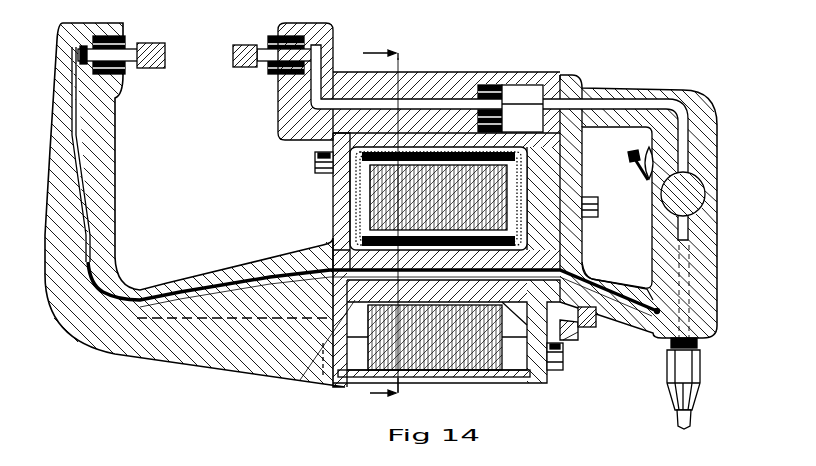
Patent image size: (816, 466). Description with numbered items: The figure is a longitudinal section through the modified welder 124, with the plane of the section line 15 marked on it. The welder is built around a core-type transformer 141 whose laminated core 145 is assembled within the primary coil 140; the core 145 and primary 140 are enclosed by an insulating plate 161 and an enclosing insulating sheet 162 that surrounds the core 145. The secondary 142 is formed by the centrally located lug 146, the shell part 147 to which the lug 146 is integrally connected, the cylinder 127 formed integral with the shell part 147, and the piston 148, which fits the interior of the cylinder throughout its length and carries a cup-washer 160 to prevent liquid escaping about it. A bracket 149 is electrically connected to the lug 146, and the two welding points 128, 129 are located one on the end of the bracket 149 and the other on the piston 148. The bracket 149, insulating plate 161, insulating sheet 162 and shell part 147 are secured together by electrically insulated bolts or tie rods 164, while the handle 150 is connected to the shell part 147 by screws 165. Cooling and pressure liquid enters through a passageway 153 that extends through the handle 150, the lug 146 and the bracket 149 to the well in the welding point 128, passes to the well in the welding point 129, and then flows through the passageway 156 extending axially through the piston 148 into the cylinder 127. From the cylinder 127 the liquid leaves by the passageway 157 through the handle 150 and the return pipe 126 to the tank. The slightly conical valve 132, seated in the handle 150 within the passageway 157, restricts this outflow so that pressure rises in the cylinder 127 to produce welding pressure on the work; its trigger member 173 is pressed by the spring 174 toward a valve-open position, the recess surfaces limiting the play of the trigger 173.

The section line 15— 15 is at (374, 226).
The welder 124 is at (565, 252).
The return pipe 126 is at (683, 432).
The cylinder 127 is at (522, 95).
The welding point 128 is at (162, 70).
The welding point 129 is at (233, 63).
The valve 132 is at (706, 190).
The primary coil 140 is at (560, 110).
The transformer 141 is at (394, 201).
The secondary 142 is at (458, 86).
The laminated core 145 is at (482, 374).
The lug 146 is at (322, 370).
The shell part 147 is at (545, 197).
The piston 148 is at (420, 86).
The bracket 149 is at (217, 278).
The handle 150 is at (700, 284).
The passageway 153 is at (83, 195).
The passageway 156 is at (308, 97).
The passageway 157 is at (628, 106).
The cup-washer 160 is at (494, 88).
The insulating plate 161 is at (333, 203).
The insulating sheet 162 is at (424, 375).
The tie rods 164 is at (563, 376).
The screws 165 is at (599, 206).
The trigger member 173 is at (642, 172).
The spring 174 is at (634, 158).